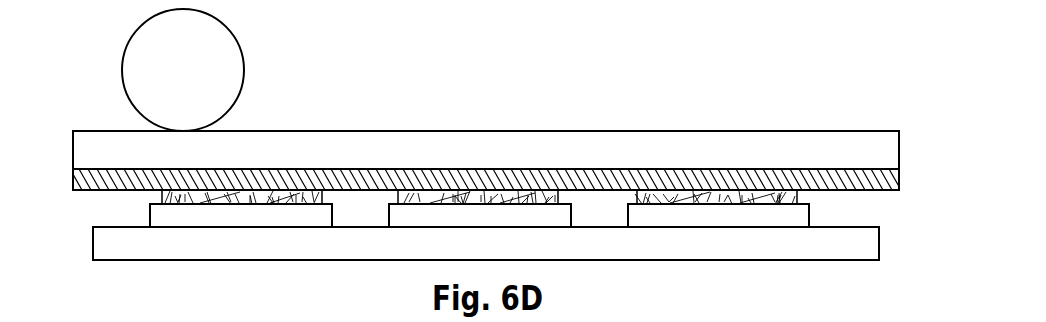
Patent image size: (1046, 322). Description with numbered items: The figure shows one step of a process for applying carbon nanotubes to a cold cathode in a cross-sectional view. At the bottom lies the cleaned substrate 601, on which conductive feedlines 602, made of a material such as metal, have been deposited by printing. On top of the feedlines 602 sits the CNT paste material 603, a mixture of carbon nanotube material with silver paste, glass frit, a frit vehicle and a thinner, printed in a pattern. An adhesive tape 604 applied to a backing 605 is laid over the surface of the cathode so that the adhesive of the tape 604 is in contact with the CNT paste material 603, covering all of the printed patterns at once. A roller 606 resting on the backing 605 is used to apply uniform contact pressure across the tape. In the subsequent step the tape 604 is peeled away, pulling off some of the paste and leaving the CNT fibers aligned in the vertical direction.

The substrate 601 is at (879, 253).
The conductive feedlines 602 is at (810, 222).
The CNT paste material 603 is at (798, 196).
The adhesive tape 604 is at (900, 183).
The backing 605 is at (858, 131).
The roller 606 is at (242, 52).